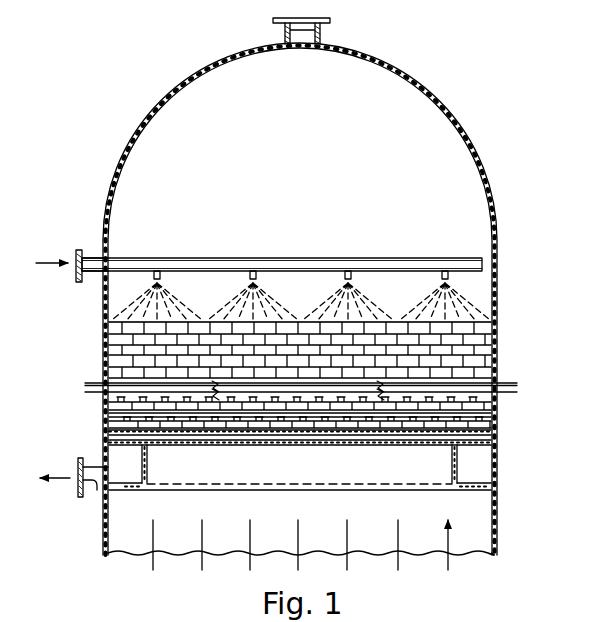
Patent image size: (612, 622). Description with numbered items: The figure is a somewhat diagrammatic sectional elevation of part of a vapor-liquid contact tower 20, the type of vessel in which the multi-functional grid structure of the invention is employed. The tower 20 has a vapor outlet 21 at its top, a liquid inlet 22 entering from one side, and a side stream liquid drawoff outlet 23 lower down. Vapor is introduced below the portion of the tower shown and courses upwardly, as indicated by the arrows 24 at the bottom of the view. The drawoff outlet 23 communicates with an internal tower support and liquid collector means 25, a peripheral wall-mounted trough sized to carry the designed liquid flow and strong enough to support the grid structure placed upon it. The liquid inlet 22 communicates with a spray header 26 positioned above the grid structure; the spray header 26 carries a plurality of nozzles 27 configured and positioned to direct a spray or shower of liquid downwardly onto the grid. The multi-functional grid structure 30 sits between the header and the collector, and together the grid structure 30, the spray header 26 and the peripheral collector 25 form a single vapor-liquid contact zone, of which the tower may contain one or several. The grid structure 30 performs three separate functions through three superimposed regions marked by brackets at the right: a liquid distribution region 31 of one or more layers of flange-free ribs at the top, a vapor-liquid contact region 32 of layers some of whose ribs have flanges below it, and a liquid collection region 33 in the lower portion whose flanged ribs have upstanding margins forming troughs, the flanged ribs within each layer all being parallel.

The vapor-liquid contact tower 20 is at (112, 146).
The vapor outlet 21 is at (284, 33).
The liquid inlet 22 is at (100, 256).
The side stream liquid drawoff outlet 23 is at (86, 491).
The arrows 24 is at (153, 571).
The internal tower support and liquid collector means 25 is at (425, 491).
The spray header 26 is at (226, 257).
The nozzles 27 is at (250, 279).
The multi-functional grid structure 30 is at (94, 350).
The liquid distribution region 31 is at (512, 322).
The vapor-liquid contact region 32 is at (512, 350).
The liquid collection region 33 is at (512, 405).